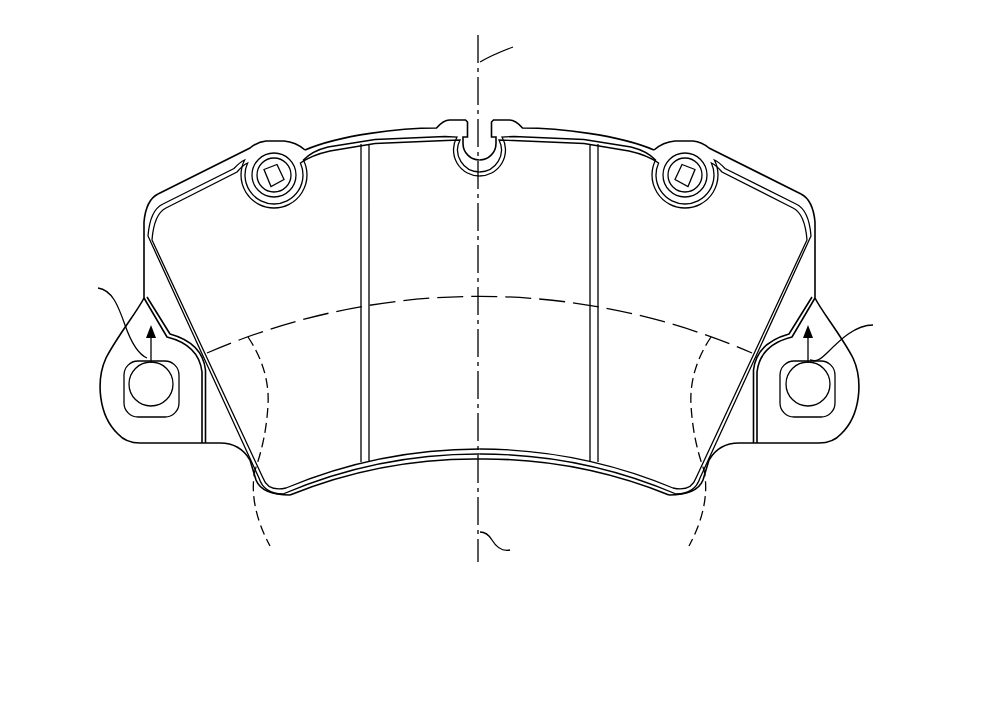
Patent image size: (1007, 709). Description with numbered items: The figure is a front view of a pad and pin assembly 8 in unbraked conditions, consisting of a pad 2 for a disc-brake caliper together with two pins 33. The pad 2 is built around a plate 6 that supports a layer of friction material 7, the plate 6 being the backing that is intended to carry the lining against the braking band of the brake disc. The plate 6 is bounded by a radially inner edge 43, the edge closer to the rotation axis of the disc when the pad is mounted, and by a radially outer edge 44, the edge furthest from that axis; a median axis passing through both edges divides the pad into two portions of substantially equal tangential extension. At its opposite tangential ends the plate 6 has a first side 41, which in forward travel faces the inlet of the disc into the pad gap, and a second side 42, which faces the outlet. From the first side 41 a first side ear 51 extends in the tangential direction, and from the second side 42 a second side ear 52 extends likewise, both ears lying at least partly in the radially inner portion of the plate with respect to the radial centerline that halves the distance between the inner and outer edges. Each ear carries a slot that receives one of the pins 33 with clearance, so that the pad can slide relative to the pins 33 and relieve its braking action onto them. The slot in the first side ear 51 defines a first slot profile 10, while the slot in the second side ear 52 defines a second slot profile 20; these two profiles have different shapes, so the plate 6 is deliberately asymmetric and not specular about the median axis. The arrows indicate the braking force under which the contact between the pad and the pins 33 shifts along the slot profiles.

The pad 2 is at (611, 137).
The plate 6 is at (725, 164).
The friction material 7 is at (542, 183).
The pad and pin assembly 8 is at (822, 164).
The first slot profile 10 is at (840, 378).
The second slot profile 20 is at (116, 389).
The pins 33 is at (152, 383).
The first side 41 is at (817, 240).
The second side 42 is at (143, 237).
The radially inner edge 43 is at (437, 462).
The radially outer edge 44 is at (380, 130).
The first side ear 51 is at (788, 430).
The second side ear 52 is at (125, 425).